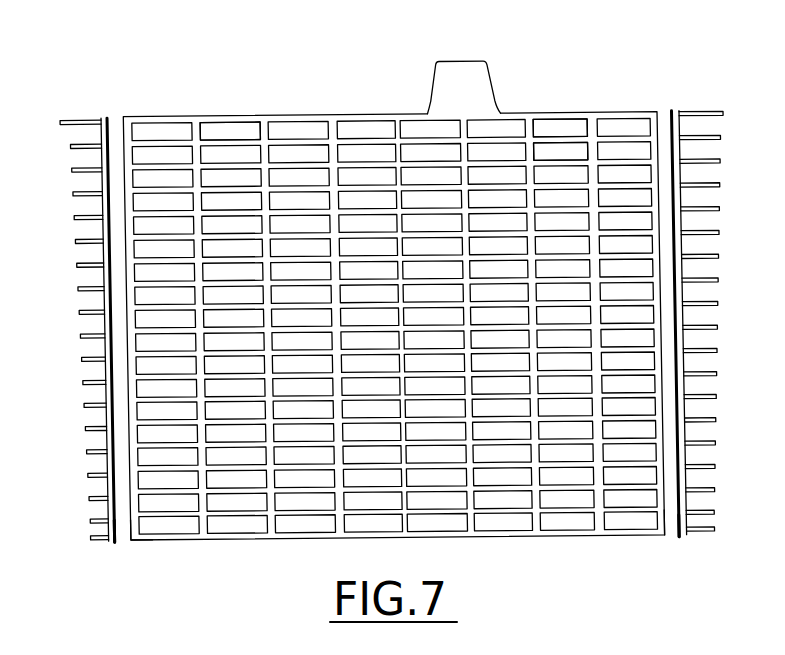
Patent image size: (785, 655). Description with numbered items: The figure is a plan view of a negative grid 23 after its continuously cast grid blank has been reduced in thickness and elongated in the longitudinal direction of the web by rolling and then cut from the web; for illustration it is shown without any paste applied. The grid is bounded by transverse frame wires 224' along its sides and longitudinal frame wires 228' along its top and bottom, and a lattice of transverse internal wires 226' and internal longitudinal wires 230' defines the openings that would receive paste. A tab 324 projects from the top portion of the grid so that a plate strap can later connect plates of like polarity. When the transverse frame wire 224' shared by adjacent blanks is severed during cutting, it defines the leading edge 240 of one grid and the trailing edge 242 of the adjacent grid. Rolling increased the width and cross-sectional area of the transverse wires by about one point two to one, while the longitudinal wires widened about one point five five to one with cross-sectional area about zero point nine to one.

The negative grid 23 is at (66, 107).
The transverse frame wire 224' is at (399, 300).
The transverse internal wire 226' is at (231, 100).
The longitudinal frame wire 228' is at (393, 299).
The internal longitudinal wire 230' is at (583, 109).
The tab 324 is at (468, 72).
The leading edge 240 is at (115, 537).
The trailing edge 242 is at (137, 541).